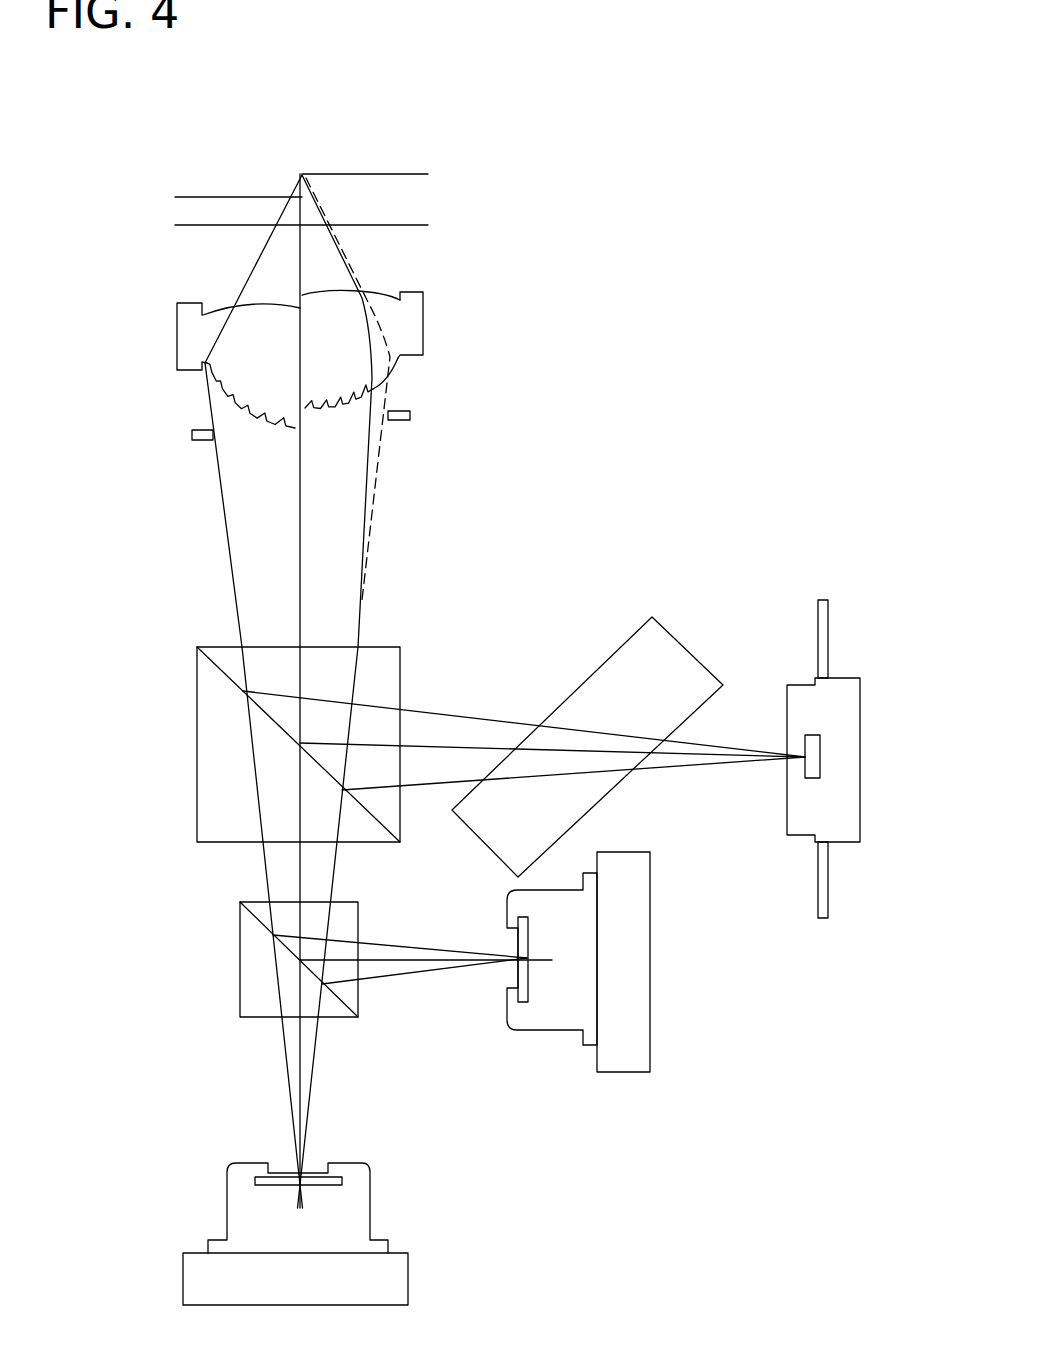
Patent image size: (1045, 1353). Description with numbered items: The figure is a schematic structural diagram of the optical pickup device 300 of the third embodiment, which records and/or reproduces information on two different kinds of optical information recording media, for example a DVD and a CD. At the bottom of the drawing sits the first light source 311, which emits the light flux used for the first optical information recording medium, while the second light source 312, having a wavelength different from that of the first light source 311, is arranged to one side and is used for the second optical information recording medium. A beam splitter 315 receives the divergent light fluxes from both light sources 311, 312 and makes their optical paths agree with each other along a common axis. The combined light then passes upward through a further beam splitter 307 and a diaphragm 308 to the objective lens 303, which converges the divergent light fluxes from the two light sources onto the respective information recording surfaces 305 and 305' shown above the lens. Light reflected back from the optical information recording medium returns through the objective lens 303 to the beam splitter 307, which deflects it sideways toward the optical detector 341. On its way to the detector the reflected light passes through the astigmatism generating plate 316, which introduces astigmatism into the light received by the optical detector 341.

The optical pickup device 300 is at (644, 309).
The information recording surface 305 is at (366, 148).
The information recording surface 305' is at (301, 183).
The objective lens 303 is at (424, 323).
The diaphragm 308 is at (411, 415).
The beam splitter 307 is at (402, 668).
The astigmatism generating plate 316 is at (638, 628).
The optical detector 341 is at (862, 800).
The beam splitter 315 is at (339, 1019).
The second light source 312 is at (541, 1032).
The first light source 311 is at (371, 1200).